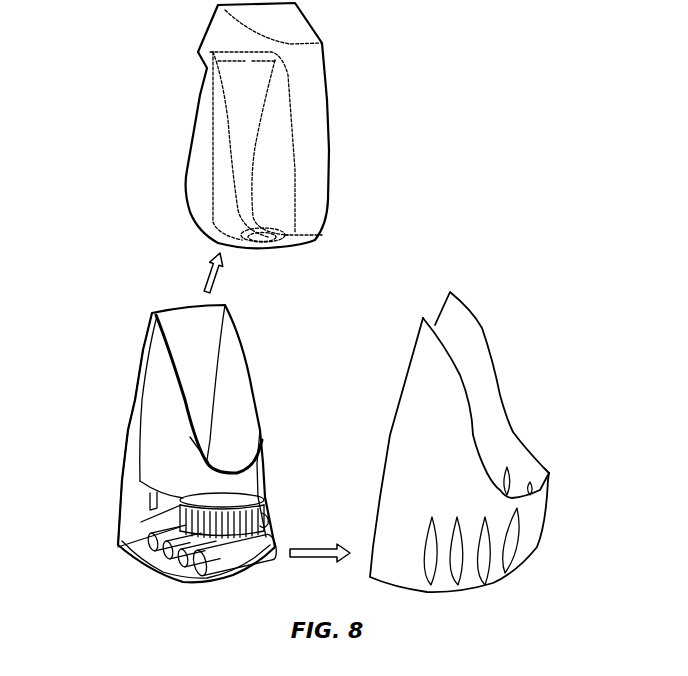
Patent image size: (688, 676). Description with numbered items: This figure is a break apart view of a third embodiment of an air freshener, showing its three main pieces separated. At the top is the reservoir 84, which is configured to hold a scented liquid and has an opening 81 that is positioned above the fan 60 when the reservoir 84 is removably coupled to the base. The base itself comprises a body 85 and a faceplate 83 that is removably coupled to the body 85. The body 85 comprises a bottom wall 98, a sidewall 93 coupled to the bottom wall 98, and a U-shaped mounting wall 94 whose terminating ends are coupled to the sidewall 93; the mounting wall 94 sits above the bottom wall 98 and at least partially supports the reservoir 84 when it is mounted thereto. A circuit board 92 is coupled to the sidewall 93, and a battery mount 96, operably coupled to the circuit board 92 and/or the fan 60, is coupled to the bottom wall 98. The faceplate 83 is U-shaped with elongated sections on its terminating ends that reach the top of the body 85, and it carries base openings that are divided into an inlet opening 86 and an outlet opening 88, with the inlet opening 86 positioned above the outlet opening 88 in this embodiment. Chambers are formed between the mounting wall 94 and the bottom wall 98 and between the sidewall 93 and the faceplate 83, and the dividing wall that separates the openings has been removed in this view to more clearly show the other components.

The fan 60 is at (252, 520).
The opening 81 is at (263, 238).
The faceplate 83 is at (492, 382).
The reservoir 84 is at (310, 93).
The body 85 is at (181, 449).
The inlet opening 86 is at (517, 527).
The outlet opening 88 is at (507, 555).
The circuit board 92 is at (141, 522).
The sidewall 93 is at (123, 482).
The mounting wall 94 is at (154, 442).
The battery mount 96 is at (180, 557).
The bottom wall 98 is at (247, 567).